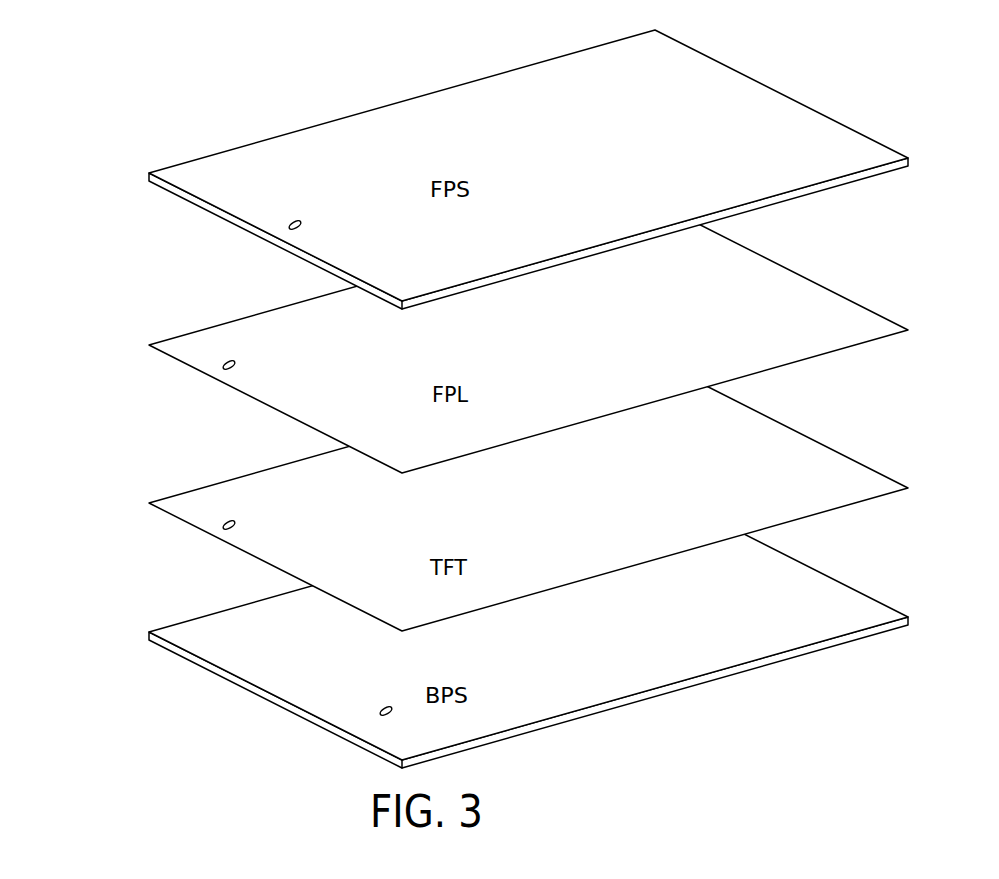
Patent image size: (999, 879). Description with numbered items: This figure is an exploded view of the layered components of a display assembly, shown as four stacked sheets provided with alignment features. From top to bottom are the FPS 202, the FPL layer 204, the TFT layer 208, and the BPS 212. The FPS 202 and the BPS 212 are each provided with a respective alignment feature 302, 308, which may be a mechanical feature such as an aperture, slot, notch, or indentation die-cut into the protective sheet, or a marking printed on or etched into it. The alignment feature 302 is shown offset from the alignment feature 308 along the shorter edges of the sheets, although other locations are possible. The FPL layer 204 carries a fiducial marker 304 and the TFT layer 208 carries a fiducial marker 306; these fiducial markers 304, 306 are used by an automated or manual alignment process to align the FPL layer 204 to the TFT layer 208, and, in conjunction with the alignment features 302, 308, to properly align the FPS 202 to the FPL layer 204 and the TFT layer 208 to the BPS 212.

The FPS 202 is at (737, 100).
The FPL layer 204 is at (813, 315).
The TFT layer 208 is at (815, 473).
The BPS 212 is at (830, 608).
The alignment feature 302 is at (287, 228).
The fiducial marker 304 is at (222, 368).
The fiducial marker 306 is at (222, 528).
The alignment feature 308 is at (378, 715).